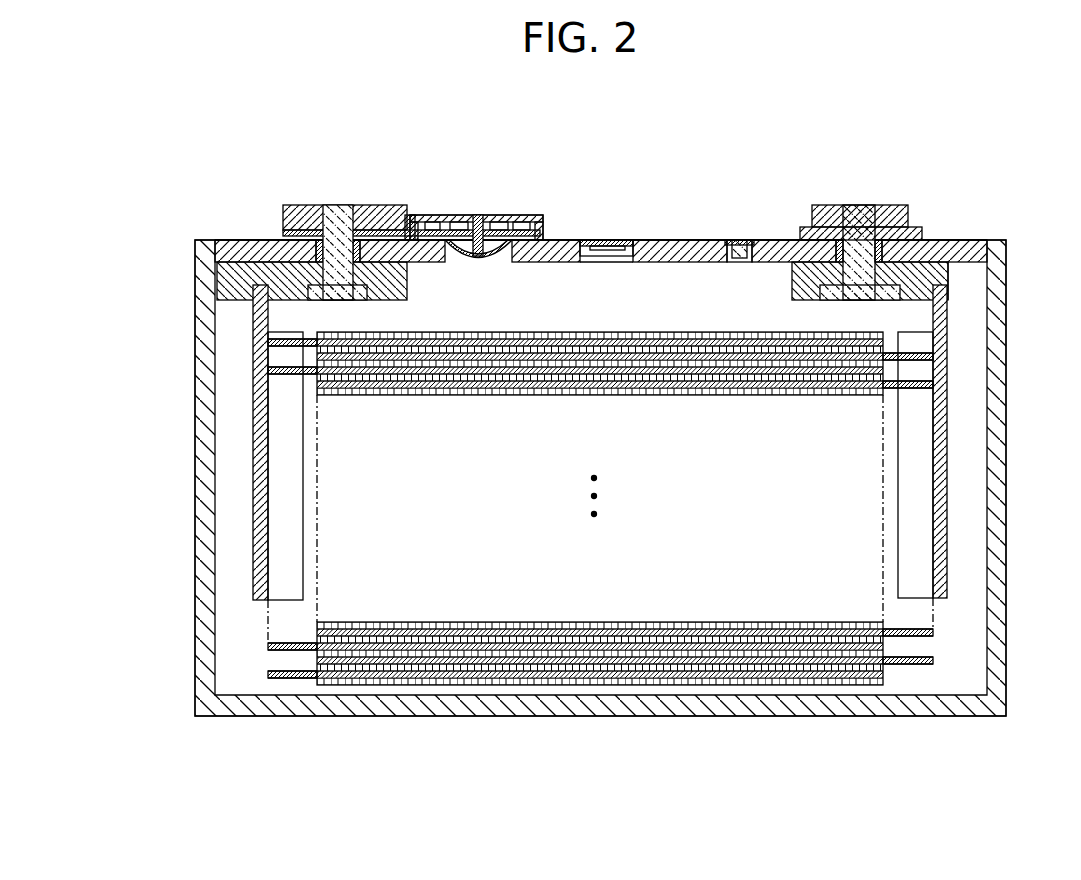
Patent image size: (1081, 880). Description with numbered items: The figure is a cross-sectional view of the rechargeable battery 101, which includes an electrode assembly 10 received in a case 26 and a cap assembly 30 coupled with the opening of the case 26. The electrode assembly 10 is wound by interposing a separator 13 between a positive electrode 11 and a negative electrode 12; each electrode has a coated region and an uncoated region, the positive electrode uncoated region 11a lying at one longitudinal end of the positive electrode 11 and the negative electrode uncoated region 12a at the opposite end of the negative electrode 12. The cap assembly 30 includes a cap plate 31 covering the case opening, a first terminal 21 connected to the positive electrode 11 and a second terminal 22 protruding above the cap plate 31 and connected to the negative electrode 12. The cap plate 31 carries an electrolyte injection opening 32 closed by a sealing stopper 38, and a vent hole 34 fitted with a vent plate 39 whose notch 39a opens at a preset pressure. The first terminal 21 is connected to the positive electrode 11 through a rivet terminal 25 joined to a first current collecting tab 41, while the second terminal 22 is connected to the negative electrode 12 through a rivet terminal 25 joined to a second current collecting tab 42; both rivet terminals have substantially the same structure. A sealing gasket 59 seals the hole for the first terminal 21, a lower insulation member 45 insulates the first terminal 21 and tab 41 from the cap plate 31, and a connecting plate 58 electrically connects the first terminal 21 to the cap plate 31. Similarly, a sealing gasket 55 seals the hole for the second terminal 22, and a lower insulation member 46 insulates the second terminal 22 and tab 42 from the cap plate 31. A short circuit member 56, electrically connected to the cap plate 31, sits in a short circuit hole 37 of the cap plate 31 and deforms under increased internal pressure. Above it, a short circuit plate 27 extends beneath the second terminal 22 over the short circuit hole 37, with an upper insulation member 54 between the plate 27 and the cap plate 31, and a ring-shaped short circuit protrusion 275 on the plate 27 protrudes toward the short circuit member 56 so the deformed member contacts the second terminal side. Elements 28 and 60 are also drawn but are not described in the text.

The rechargeable battery 101 is at (623, 98).
The electrode assembly 10 is at (695, 690).
The positive electrode 11 is at (790, 664).
The positive electrode uncoated region 11a is at (912, 664).
The negative electrode 12 is at (405, 684).
The negative electrode uncoated region 12a is at (278, 680).
The separator 13 is at (605, 652).
The first terminal 21 is at (893, 213).
The second terminal 22 is at (300, 205).
The rivet terminal 25 is at (340, 207).
The case 26 is at (1000, 508).
The short circuit plate 27 is at (375, 230).
The connecting member 28 is at (414, 234).
The cap assembly 30 is at (566, 238).
The cap plate 31 is at (970, 240).
The electrolyte injection opening 32 is at (744, 262).
The vent hole 34 is at (607, 262).
The short circuit hole 37 is at (443, 240).
The sealing stopper 38 is at (736, 240).
The vent plate 39 is at (628, 240).
The notch 39a is at (603, 240).
The first current collecting tab 41 is at (945, 340).
The second current collecting tab 42 is at (255, 352).
The lower insulation member 45 is at (965, 280).
The lower insulation member 46 is at (237, 282).
The upper insulation member 54 is at (536, 215).
The sealing gasket 55 is at (270, 250).
The short circuit member 56 is at (500, 235).
The connecting plate 58 is at (923, 232).
The sealing gasket 59 is at (800, 262).
The short-circuit plate 60 is at (470, 228).
The short circuit protrusion 275 is at (480, 250).